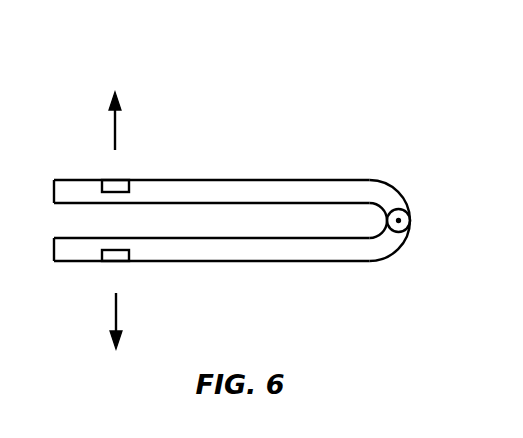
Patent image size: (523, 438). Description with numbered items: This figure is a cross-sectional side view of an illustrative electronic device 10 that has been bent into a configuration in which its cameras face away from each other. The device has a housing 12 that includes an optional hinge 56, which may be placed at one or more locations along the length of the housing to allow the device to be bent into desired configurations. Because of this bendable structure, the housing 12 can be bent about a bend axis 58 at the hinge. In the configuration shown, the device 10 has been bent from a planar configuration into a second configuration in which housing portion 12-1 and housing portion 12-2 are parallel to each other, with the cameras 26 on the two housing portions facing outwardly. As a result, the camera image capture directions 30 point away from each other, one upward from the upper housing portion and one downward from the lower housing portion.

The electronic device 10 is at (316, 88).
The housing 12 is at (362, 178).
The housing portion 12-1 is at (245, 191).
The housing portion 12-2 is at (283, 251).
The cameras 26 is at (122, 183).
The camera image capture directions 30 is at (117, 122).
The hinge 56 is at (401, 238).
The bend axis 58 is at (410, 217).